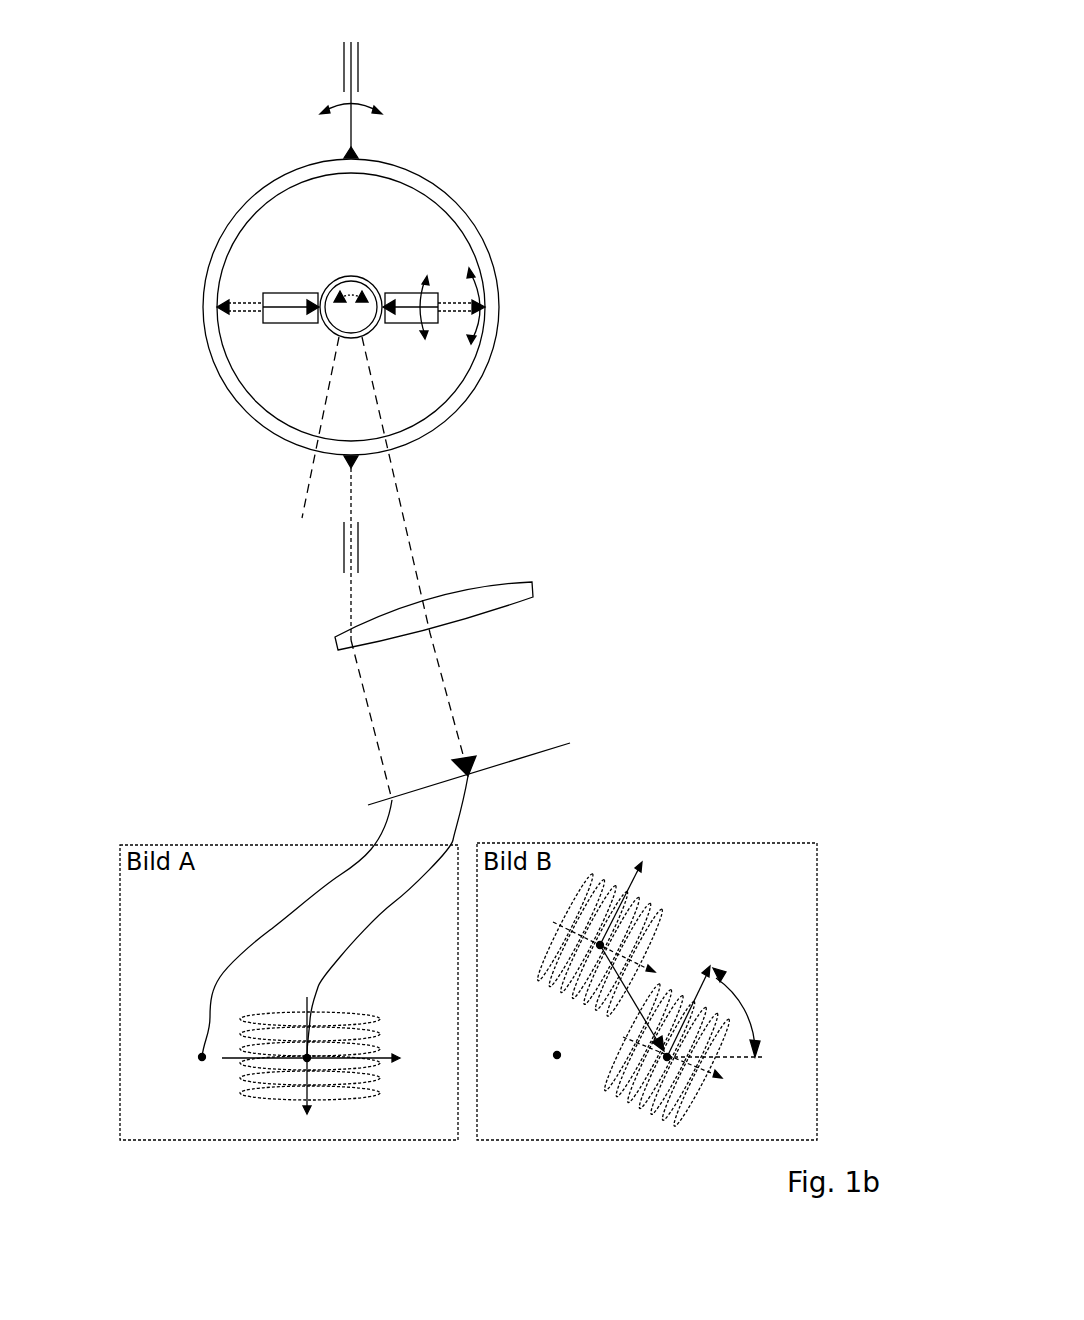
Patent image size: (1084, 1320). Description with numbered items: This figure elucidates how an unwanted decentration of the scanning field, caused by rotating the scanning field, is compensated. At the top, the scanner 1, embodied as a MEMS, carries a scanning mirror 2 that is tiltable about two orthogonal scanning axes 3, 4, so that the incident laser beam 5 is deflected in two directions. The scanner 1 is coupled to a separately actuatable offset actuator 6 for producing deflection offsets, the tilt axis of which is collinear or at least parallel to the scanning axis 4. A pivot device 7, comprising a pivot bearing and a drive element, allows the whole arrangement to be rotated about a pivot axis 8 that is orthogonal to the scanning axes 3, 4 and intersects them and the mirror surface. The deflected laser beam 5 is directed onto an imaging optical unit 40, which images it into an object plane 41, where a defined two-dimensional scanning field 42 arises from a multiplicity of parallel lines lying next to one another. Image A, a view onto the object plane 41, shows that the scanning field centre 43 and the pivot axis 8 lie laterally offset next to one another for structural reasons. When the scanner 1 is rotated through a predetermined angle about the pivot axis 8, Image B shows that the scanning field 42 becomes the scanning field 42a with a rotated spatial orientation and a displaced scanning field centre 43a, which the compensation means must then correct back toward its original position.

The scanner 1 is at (317, 335).
The scanning mirror 2 is at (277, 292).
The scanning axis 3 is at (351, 303).
The scanning axis 4 is at (425, 332).
The laser beam 5 is at (312, 463).
The offset actuator 6 is at (482, 268).
The pivot device 7 is at (268, 183).
The pivot axis 8 is at (351, 138).
The imaging optical unit 40 is at (495, 598).
The object plane 41 is at (542, 748).
The scanning field 42 is at (335, 1025).
The rotated scanning field 42a is at (635, 930).
The scanning field centre 43 is at (312, 1061).
The offset scanning field centre 43a is at (598, 948).